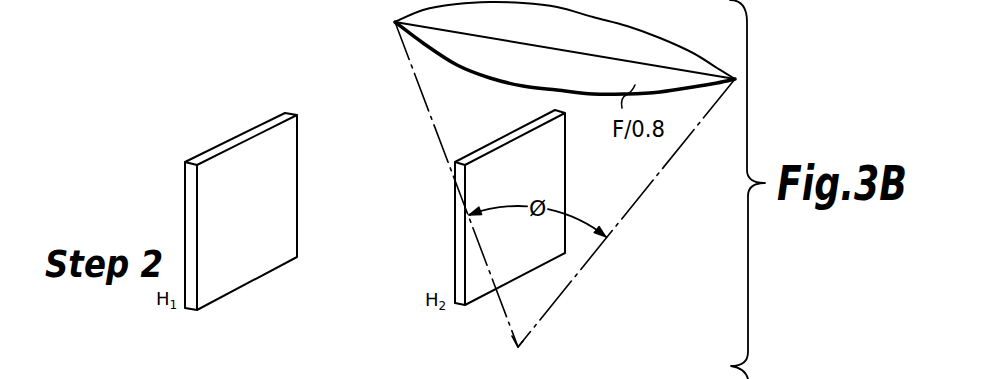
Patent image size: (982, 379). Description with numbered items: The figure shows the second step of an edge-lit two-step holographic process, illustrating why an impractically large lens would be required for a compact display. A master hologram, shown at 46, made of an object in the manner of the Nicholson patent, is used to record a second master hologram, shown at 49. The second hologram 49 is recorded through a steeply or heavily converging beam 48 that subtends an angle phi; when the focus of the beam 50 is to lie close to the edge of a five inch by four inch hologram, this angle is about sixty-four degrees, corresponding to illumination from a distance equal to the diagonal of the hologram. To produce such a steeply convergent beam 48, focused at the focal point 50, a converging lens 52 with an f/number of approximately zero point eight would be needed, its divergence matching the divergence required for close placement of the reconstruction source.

The master hologram H1 46 is at (289, 203).
The second hologram H2 49 is at (468, 272).
The converging lens 52 is at (643, 16).
The converging beam 48 is at (652, 183).
The focus of the beam 50 is at (519, 348).